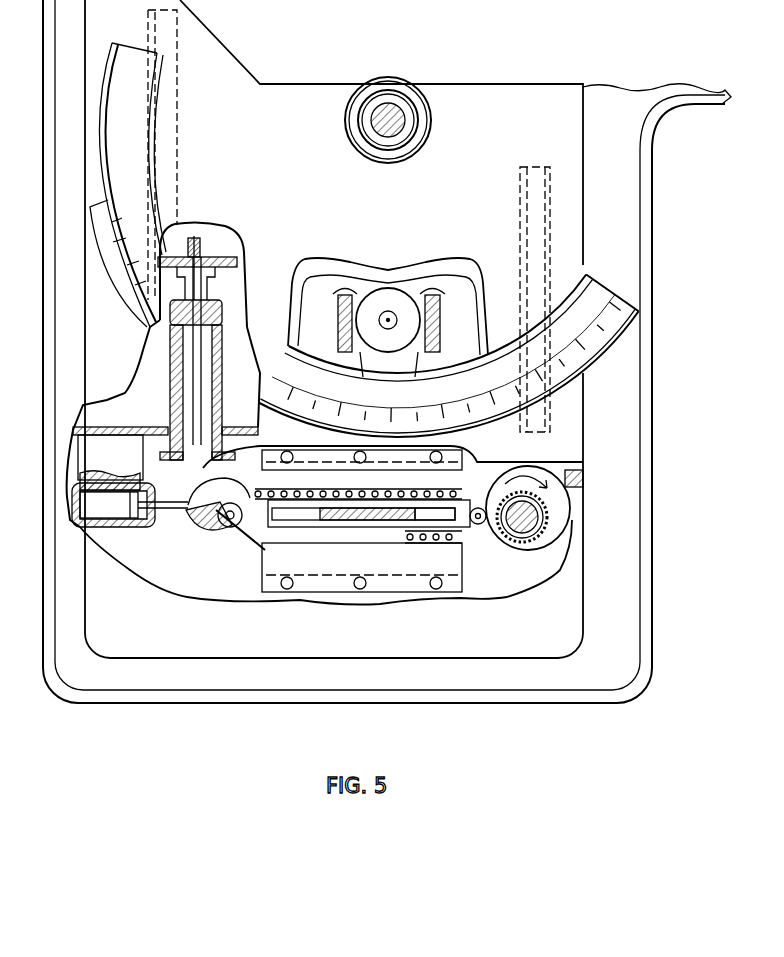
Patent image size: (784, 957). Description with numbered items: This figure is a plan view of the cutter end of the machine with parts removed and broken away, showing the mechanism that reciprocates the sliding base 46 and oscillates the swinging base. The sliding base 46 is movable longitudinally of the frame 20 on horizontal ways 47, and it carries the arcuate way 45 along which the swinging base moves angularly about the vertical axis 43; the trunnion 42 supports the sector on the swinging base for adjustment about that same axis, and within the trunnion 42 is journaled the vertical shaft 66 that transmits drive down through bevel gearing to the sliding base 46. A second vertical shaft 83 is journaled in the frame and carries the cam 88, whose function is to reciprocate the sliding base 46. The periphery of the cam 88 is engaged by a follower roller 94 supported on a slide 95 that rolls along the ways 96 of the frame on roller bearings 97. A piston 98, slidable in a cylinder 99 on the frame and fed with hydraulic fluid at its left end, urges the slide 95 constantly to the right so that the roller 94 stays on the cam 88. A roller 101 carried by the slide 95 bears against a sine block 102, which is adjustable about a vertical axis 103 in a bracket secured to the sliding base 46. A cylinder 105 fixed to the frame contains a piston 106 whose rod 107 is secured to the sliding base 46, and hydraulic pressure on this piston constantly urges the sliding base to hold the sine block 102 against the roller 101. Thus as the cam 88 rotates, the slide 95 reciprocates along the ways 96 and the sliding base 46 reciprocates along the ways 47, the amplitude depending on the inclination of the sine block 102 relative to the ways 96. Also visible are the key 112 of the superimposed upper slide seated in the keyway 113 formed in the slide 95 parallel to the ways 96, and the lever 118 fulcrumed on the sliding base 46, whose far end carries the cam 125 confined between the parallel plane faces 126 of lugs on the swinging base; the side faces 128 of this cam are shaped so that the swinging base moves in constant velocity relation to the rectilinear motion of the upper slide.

The frame 20 is at (618, 620).
The trunnion 42 is at (380, 135).
The vertical axis 43 is at (395, 118).
The arcuate way 45 is at (147, 205).
The sliding base 46 is at (232, 250).
The horizontal ways 47 is at (175, 138).
The vertical shaft 66 is at (403, 100).
The vertical shaft 83 is at (545, 514).
The cam 88 is at (520, 470).
The follower roller 94 is at (490, 527).
The slide 95 is at (346, 527).
The ways 96 is at (347, 494).
The roller bearings 97 is at (262, 494).
The piston 98 is at (137, 525).
The cylinder 99 is at (80, 530).
The roller 101 is at (231, 528).
The sine block 102 is at (208, 530).
The vertical axis 103 is at (212, 505).
The cylinder 105 is at (173, 392).
The piston 106 is at (237, 426).
The rod 107 is at (197, 317).
The key 112 is at (360, 520).
The keyway 113 is at (442, 520).
The lever 118 is at (407, 372).
The cam 125 is at (401, 355).
The parallel plane faces 126 is at (343, 295).
The side faces 128 is at (428, 278).